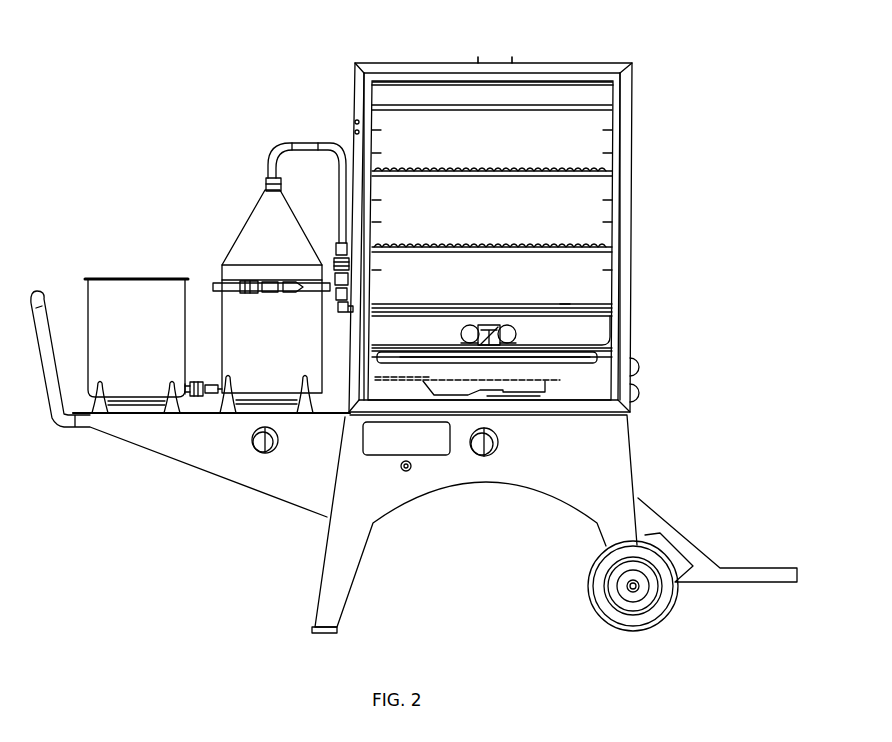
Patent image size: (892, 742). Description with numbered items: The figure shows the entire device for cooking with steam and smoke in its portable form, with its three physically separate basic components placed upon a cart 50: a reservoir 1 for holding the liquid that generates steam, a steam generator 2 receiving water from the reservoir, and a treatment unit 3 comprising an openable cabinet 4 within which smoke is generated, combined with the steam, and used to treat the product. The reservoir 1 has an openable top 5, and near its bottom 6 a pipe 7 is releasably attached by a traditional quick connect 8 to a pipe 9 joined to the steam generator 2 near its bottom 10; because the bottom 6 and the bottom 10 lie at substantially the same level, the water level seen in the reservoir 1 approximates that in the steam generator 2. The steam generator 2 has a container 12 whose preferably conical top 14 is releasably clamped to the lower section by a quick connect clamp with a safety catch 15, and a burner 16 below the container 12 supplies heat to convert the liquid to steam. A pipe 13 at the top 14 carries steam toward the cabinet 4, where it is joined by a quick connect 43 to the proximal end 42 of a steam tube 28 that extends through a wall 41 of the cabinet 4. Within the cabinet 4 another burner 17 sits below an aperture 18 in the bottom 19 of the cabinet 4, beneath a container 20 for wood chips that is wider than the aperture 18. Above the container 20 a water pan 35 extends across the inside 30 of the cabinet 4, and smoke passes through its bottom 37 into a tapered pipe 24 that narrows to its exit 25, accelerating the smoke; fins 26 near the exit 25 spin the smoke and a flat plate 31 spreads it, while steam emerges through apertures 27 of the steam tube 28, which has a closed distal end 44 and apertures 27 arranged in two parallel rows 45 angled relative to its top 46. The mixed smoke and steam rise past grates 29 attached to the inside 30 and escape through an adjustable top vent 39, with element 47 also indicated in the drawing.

The reservoir 1 is at (83, 346).
The steam generator 2 is at (226, 344).
The treatment unit 3 is at (657, 112).
The cabinet 4 is at (378, 70).
The openable top 5 is at (117, 279).
The bottom of the reservoir 6 is at (118, 420).
The pipe 7 is at (201, 396).
The quick connect 8 is at (190, 382).
The pipe 9 is at (212, 385).
The bottom of the steam generator 10 is at (283, 414).
The container 12 is at (248, 242).
The pipe 13 is at (313, 147).
The top of the container 14 is at (265, 186).
The quick connect clamp with a safety catch 15 is at (225, 288).
The burner 16 is at (261, 452).
The burner 17 is at (486, 455).
The aperture 18 is at (487, 396).
The bottom of the cabinet 19 is at (536, 401).
The container 20 is at (556, 388).
The tapered pipe 24 is at (464, 344).
The exit 25 is at (512, 344).
The fins 26 is at (466, 328).
The apertures 27 is at (486, 320).
The steam tube 28 is at (412, 312).
The grates 29 is at (604, 168).
The inside of the cabinet 30 is at (614, 193).
The flat plate 31 is at (486, 328).
The water pan 35 is at (600, 353).
The bottom of the water pan 37 is at (578, 363).
The top vent 39 is at (495, 63).
The wall of the cabinet 41 is at (355, 330).
The proximal end of the steam tube 42 is at (336, 314).
The quick connect 43 is at (338, 257).
The distal end of the steam tube 44 is at (620, 306).
The rows 45 is at (505, 300).
The top of the steam tube 46 is at (565, 303).
The tray inner rail 47 is at (596, 314).
The cart 50 is at (434, 520).